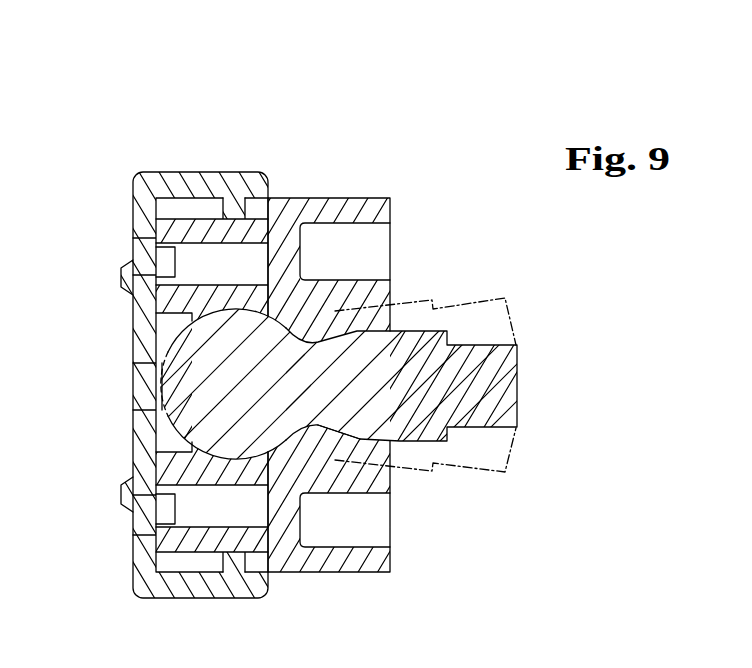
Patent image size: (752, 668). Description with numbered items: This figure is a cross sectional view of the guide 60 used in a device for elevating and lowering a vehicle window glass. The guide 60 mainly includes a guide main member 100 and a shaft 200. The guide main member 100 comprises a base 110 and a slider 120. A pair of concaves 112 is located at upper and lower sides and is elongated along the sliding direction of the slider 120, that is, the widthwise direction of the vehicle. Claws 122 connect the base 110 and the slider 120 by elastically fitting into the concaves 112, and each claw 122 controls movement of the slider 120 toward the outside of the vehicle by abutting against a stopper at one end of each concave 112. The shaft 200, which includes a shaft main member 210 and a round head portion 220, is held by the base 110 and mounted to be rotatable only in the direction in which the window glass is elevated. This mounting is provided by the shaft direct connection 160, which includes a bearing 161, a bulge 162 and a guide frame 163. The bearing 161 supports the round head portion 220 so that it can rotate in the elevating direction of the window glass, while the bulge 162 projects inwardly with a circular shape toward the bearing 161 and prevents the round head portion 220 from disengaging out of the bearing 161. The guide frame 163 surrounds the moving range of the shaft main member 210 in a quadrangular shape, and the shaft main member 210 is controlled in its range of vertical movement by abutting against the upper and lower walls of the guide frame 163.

The guide 60 is at (200, 92).
The guide main member 100 is at (317, 575).
The base 110 is at (375, 200).
The concaves 112 is at (209, 257).
The slider 120 is at (150, 177).
The claws 122 is at (133, 256).
The shaft direct connection 160 is at (380, 318).
The bearing 161 is at (135, 328).
The bulge 162 is at (315, 450).
The guide frame 163 is at (392, 480).
The shaft 200 is at (543, 330).
The shaft main member 210 is at (508, 403).
The round head portion 220 is at (180, 378).